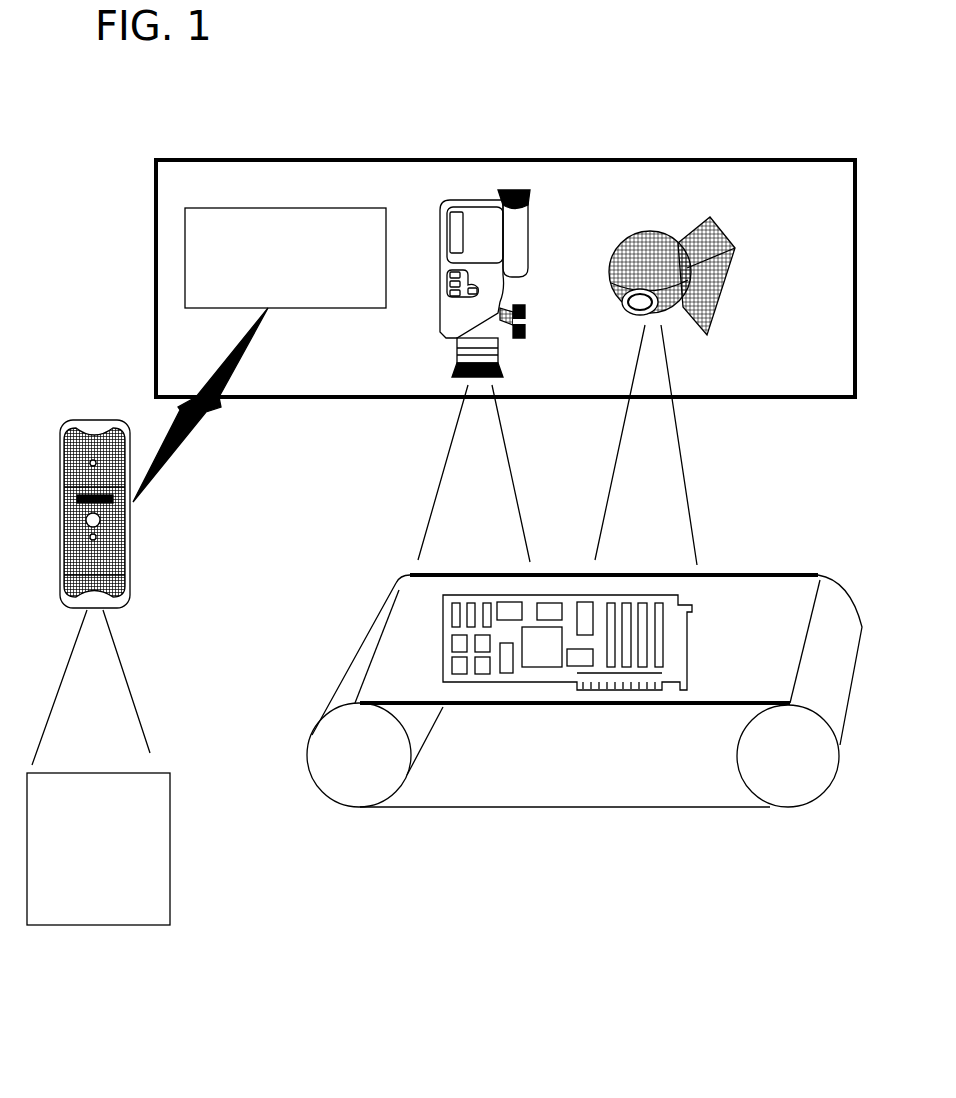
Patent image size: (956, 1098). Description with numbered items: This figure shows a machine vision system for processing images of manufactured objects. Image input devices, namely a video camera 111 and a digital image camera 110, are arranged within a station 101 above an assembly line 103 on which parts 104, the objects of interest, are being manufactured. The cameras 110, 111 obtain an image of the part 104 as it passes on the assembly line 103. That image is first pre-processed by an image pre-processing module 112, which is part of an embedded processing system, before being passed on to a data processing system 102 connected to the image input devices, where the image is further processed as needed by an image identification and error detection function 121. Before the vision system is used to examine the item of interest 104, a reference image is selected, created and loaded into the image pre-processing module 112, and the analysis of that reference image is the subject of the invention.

The inspection station enclosure 101 is at (623, 160).
The data processing system 102 is at (130, 547).
The assembly line 103 is at (735, 575).
The parts 104 is at (682, 643).
The digital image camera 110 is at (735, 248).
The video camera 111 is at (560, 230).
The image pre-processing module 112 is at (235, 208).
The image identification and error detection module 121 is at (170, 893).